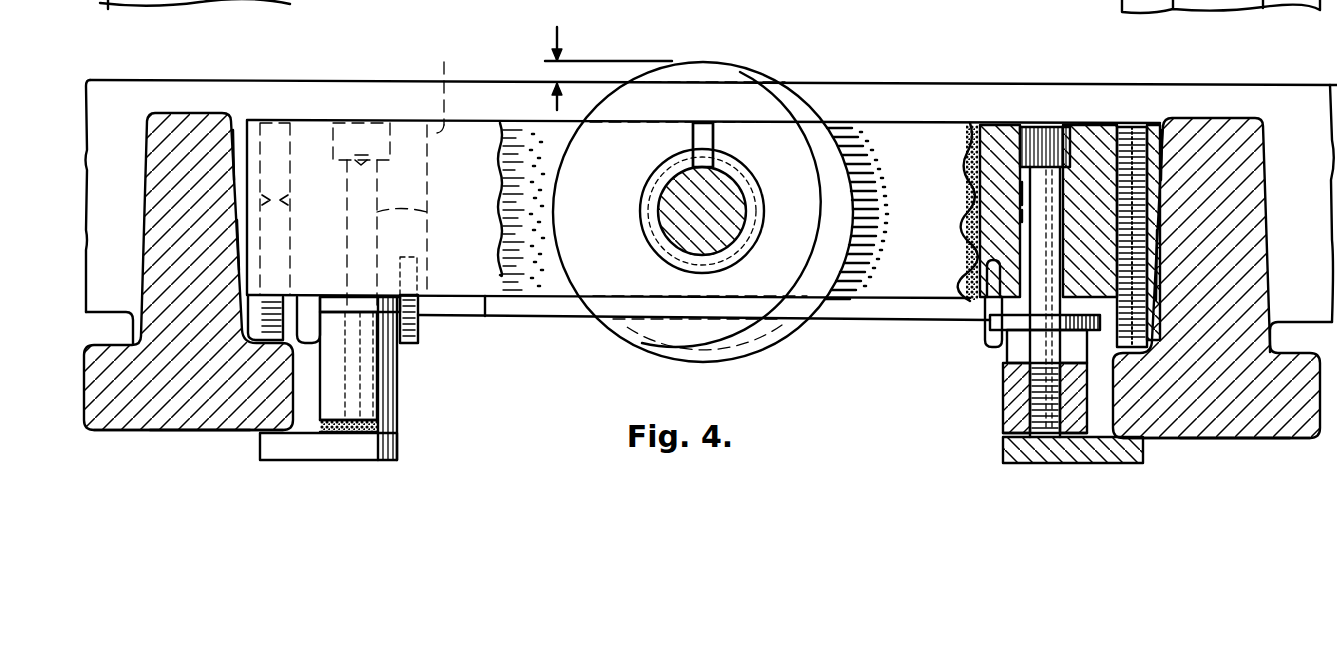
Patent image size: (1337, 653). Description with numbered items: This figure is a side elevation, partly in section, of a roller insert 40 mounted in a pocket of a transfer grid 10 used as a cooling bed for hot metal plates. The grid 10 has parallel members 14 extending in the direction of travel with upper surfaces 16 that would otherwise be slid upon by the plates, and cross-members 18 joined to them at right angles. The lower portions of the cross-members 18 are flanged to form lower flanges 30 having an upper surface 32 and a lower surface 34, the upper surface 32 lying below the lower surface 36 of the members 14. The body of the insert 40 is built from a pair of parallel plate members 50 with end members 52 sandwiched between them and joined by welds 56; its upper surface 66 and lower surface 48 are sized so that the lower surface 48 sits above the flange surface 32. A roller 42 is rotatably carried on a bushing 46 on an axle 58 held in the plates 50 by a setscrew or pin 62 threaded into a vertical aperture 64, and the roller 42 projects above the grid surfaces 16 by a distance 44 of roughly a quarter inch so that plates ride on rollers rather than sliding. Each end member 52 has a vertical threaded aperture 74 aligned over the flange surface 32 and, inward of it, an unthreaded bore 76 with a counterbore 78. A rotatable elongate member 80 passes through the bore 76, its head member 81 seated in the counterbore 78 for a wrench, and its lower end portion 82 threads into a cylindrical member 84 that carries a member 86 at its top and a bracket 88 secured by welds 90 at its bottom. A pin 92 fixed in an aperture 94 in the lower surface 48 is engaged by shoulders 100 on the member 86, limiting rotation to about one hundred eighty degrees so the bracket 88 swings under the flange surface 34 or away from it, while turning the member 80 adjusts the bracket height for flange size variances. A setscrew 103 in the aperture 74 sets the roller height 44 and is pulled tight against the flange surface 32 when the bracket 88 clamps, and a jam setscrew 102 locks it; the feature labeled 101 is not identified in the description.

The transfer grid 10 is at (944, 69).
The first parallel members 14 is at (860, 2).
The upper surfaces 16 is at (140, 80).
The cross-members 18 is at (150, 190).
The lower flange 30 is at (102, 432).
The flange upper surface 32 is at (122, 310).
The flange lower surface 34 is at (148, 432).
The lower surface of members 14 36 is at (818, 323).
The insert 40 is at (887, 120).
The roller 42 is at (712, 63).
The roller projection distance 44 is at (545, 65).
The bushing 46 is at (647, 192).
The insert lower surface 48 is at (490, 320).
The plate members 50 is at (534, 128).
The end members 52 is at (443, 70).
The welds 56 is at (965, 157).
The axle 58 is at (740, 193).
The setscrew or cylindrical pin 62 is at (716, 136).
The vertical threaded aperture 64 is at (690, 136).
The insert upper surface 66 is at (840, 122).
The vertical threaded aperture 74 is at (1128, 127).
The unthreaded vertical bore 76 is at (1022, 193).
The counterbore 78 is at (1036, 127).
The rotatable cylindrical elongate member 80 is at (1025, 216).
The head member 81 is at (1058, 130).
The lower end portion 82 is at (1003, 390).
The cylindrical member 84 is at (400, 392).
The stop member 86 is at (298, 298).
The bracket 88 is at (400, 457).
The welds 90 is at (400, 424).
The pin 92 is at (412, 346).
The aperture 94 is at (420, 268).
The shoulder 100 is at (308, 295).
The key slot 101 is at (699, 137).
The jam setscrew 102 is at (250, 149).
The setscrew 103 is at (240, 237).